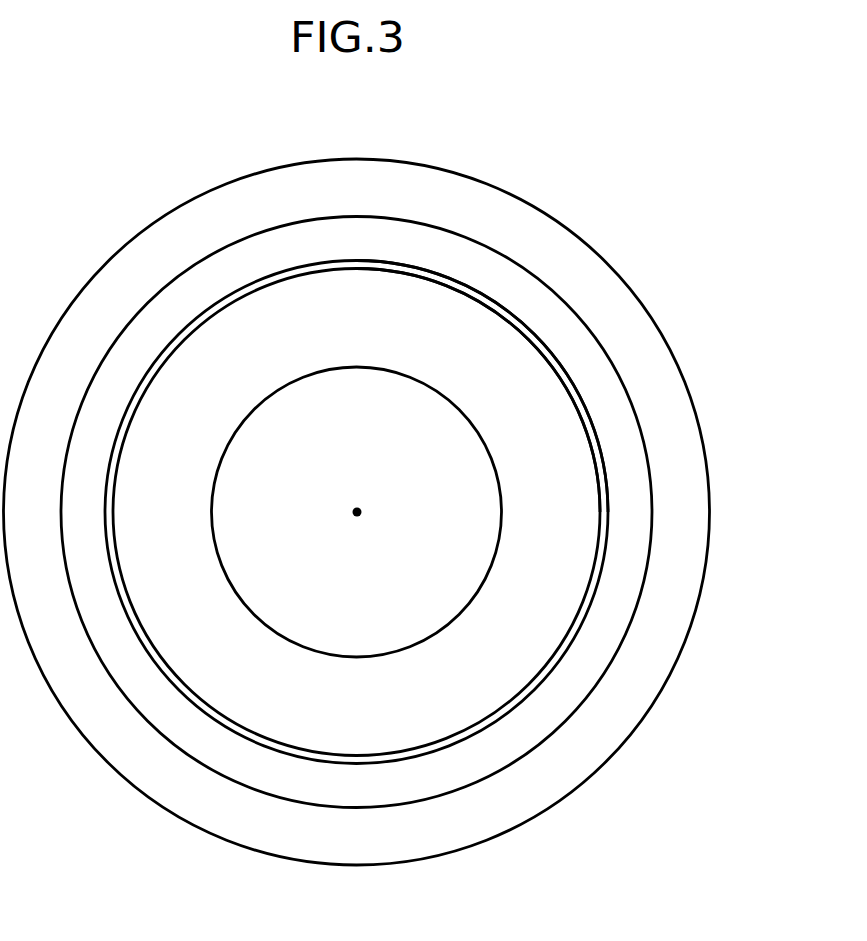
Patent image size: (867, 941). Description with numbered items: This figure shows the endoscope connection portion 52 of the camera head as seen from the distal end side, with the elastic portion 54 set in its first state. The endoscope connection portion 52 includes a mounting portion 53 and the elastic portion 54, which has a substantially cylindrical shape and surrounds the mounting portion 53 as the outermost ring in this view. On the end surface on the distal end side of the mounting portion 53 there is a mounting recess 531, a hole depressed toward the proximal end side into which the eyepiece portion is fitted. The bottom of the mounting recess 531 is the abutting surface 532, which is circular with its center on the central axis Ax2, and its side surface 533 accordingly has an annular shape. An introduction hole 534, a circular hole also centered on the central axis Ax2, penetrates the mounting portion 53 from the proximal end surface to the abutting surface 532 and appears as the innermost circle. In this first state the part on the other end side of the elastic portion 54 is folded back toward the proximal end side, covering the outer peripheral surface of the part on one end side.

The endoscope connection portion 52 is at (215, 131).
The mounting portion 53 is at (248, 337).
The elastic portion 54 is at (158, 250).
The mounting recess 531 is at (633, 131).
The abutting surface 532 is at (518, 350).
The side surface 533 is at (472, 296).
The introduction hole 534 is at (494, 464).
The central axis Ax2 is at (360, 515).